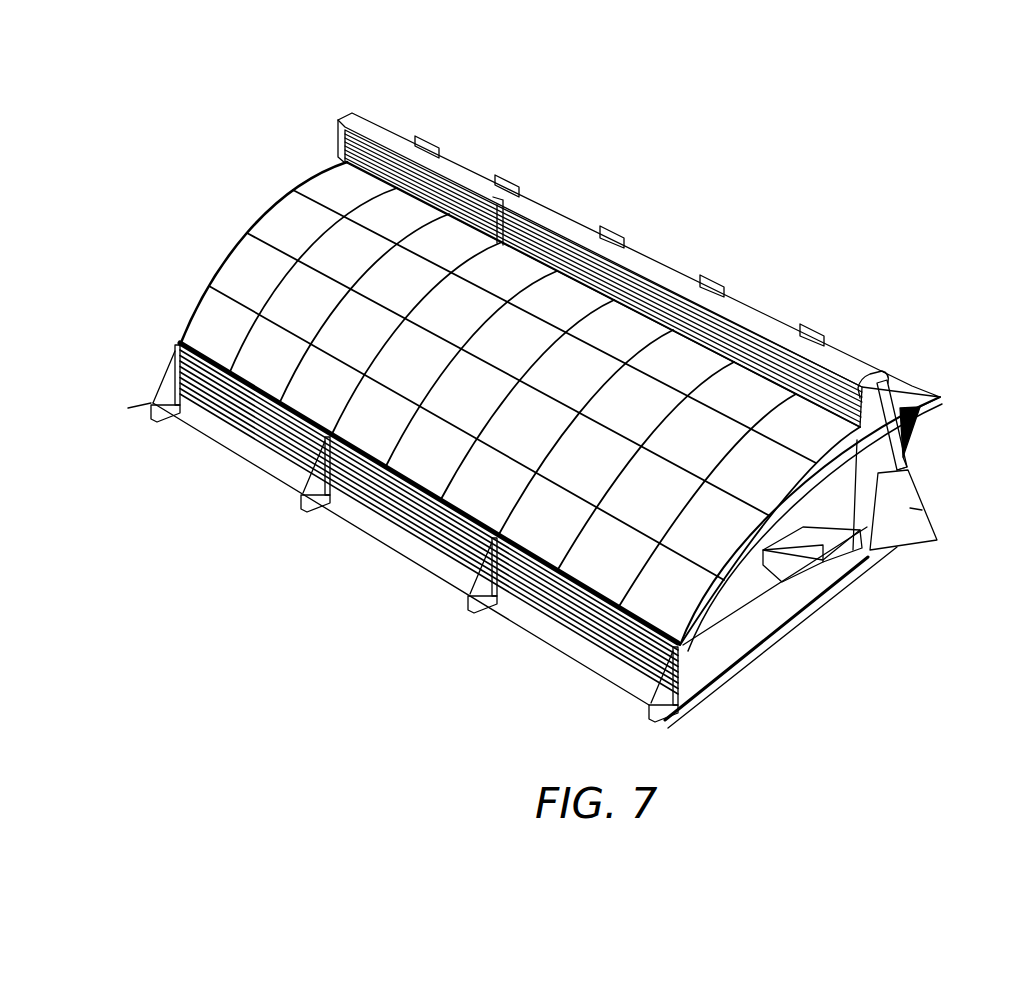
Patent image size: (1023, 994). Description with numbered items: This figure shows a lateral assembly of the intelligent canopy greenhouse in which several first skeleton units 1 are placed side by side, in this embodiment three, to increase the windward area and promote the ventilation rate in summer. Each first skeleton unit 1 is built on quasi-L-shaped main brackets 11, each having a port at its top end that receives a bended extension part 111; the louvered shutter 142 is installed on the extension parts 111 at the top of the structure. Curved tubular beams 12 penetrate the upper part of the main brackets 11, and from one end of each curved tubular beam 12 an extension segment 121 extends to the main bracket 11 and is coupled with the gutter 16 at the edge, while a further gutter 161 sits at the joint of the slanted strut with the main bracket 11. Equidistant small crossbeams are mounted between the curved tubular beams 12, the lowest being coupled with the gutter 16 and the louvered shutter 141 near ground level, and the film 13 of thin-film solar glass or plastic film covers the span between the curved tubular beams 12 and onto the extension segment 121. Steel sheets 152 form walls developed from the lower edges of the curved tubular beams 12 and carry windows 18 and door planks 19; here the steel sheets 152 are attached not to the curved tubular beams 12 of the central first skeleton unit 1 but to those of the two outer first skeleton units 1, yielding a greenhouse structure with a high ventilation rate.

The first skeleton unit 1 is at (643, 176).
The main bracket 11 is at (902, 463).
The curved tubular beam 12 is at (466, 588).
The film 13 is at (242, 262).
The gutter 16 is at (180, 347).
The window 18 is at (800, 560).
The door plank 19 is at (920, 538).
The bended extension part 111 is at (893, 386).
The extension segment 121 is at (892, 398).
The louvered shutter 141 is at (233, 423).
The louvered shutter 142 is at (348, 147).
The steel sheet 152 is at (730, 600).
The gutter 161 is at (850, 344).